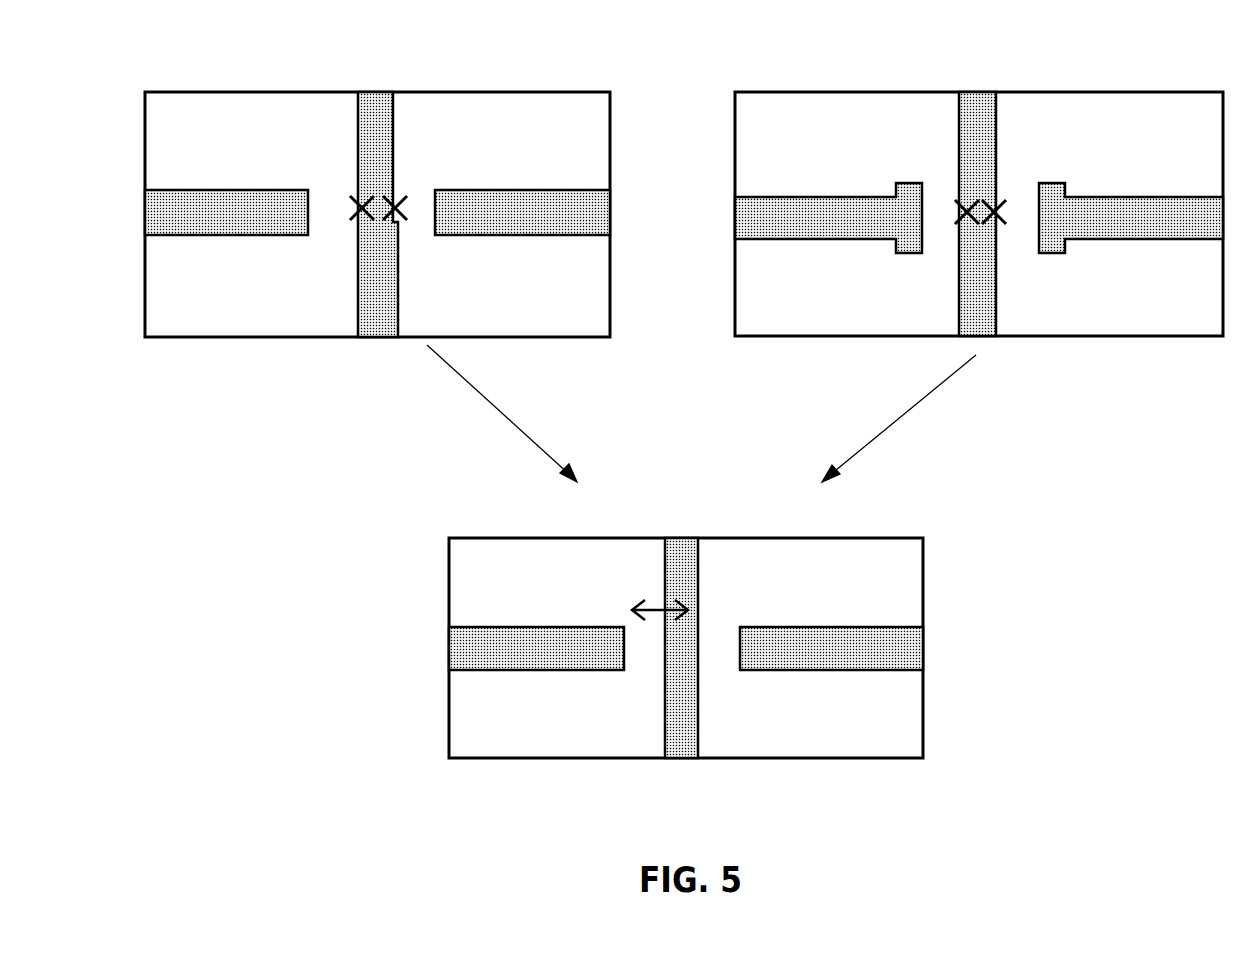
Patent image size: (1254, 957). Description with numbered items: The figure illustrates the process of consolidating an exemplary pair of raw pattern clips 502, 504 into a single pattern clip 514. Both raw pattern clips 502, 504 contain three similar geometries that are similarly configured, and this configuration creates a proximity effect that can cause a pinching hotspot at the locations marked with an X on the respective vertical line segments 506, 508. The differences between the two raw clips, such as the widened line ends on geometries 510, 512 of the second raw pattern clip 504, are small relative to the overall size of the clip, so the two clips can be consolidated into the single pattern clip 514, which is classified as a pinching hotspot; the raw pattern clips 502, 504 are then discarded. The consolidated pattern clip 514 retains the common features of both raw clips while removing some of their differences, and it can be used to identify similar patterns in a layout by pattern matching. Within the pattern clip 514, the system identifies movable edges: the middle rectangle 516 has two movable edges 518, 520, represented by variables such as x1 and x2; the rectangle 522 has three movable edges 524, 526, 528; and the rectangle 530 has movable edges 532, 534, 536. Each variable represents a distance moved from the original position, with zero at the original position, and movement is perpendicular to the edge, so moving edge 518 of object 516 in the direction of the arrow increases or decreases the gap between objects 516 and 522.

The raw pattern clip 502 is at (145, 92).
The raw pattern clip 504 is at (735, 92).
The vertical line segment 506 is at (393, 165).
The vertical line segment 508 is at (979, 122).
The geometry 510 is at (800, 196).
The geometry 512 is at (1196, 196).
The pattern clip 514 is at (449, 538).
The middle rectangle 516 is at (684, 648).
The movable edge 518 is at (665, 592).
The movable edge 520 is at (698, 592).
The rectangle 522 is at (536, 648).
The movable edge 524 is at (517, 627).
The movable edge 526 is at (624, 650).
The movable edge 528 is at (517, 670).
The rectangle 530 is at (831, 648).
The movable edge 532 is at (855, 627).
The movable edge 534 is at (740, 650).
The movable edge 536 is at (855, 670).